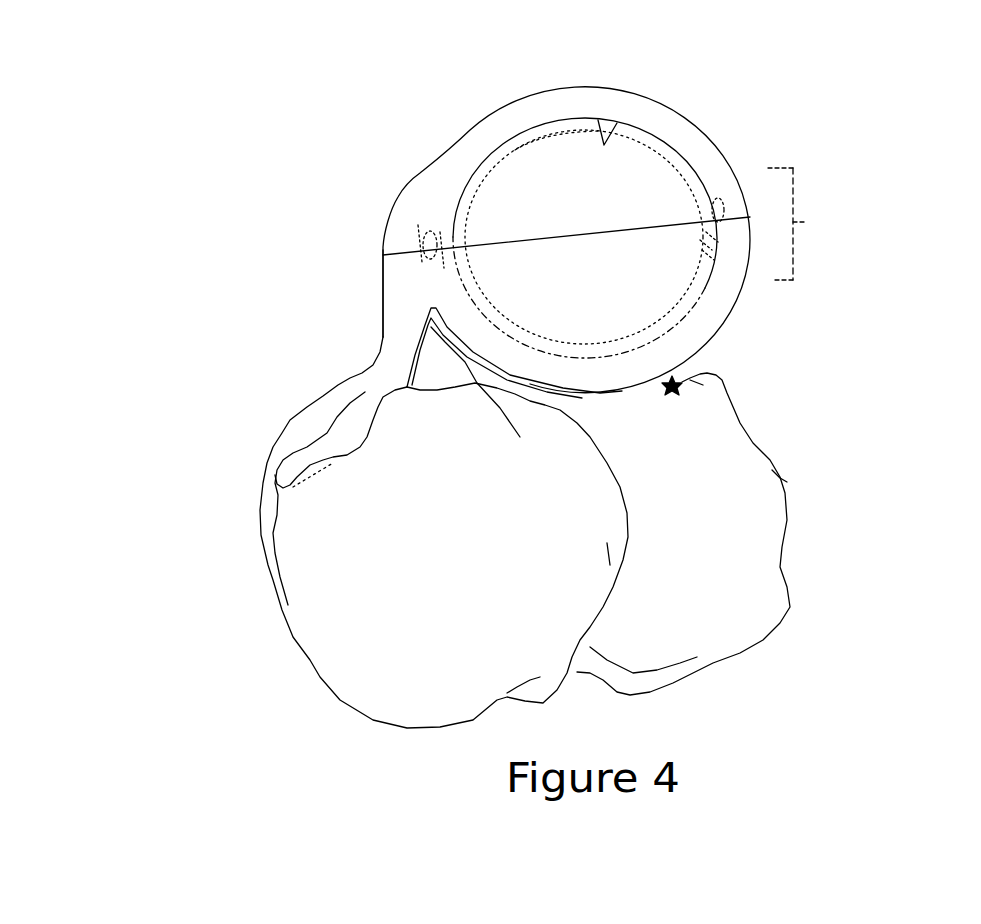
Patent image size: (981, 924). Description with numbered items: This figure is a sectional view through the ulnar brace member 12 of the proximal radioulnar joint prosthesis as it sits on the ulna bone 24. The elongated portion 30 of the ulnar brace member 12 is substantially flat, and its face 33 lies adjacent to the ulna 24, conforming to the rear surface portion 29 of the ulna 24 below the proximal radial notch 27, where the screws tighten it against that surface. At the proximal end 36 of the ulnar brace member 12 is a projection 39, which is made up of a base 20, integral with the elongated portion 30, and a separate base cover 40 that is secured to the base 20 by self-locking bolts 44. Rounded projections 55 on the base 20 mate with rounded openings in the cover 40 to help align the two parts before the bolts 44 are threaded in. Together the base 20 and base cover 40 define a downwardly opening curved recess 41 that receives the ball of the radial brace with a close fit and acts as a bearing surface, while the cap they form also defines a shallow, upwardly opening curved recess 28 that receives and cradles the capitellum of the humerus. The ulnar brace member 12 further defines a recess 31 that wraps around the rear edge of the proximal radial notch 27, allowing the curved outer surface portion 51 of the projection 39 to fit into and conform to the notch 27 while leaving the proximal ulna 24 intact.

The ulnar brace member 12 is at (353, 187).
The base 20 is at (723, 322).
The ulna bone 24 is at (337, 703).
The proximal radial notch 27 is at (563, 387).
The upwardly opening curved recess 28 is at (606, 138).
The rear surface portion 29 is at (340, 455).
The elongated portion 30 is at (370, 393).
The recess 31 is at (598, 520).
The face 33 is at (395, 398).
The proximal end 36 is at (383, 296).
The projection 39 is at (814, 224).
The base cover 40 is at (677, 132).
The downwardly opening curved recess 41 is at (553, 118).
The self-locking bolts 44 is at (412, 250).
The curved outer surface portion 51 is at (677, 393).
The rounded projections 55 is at (447, 253).